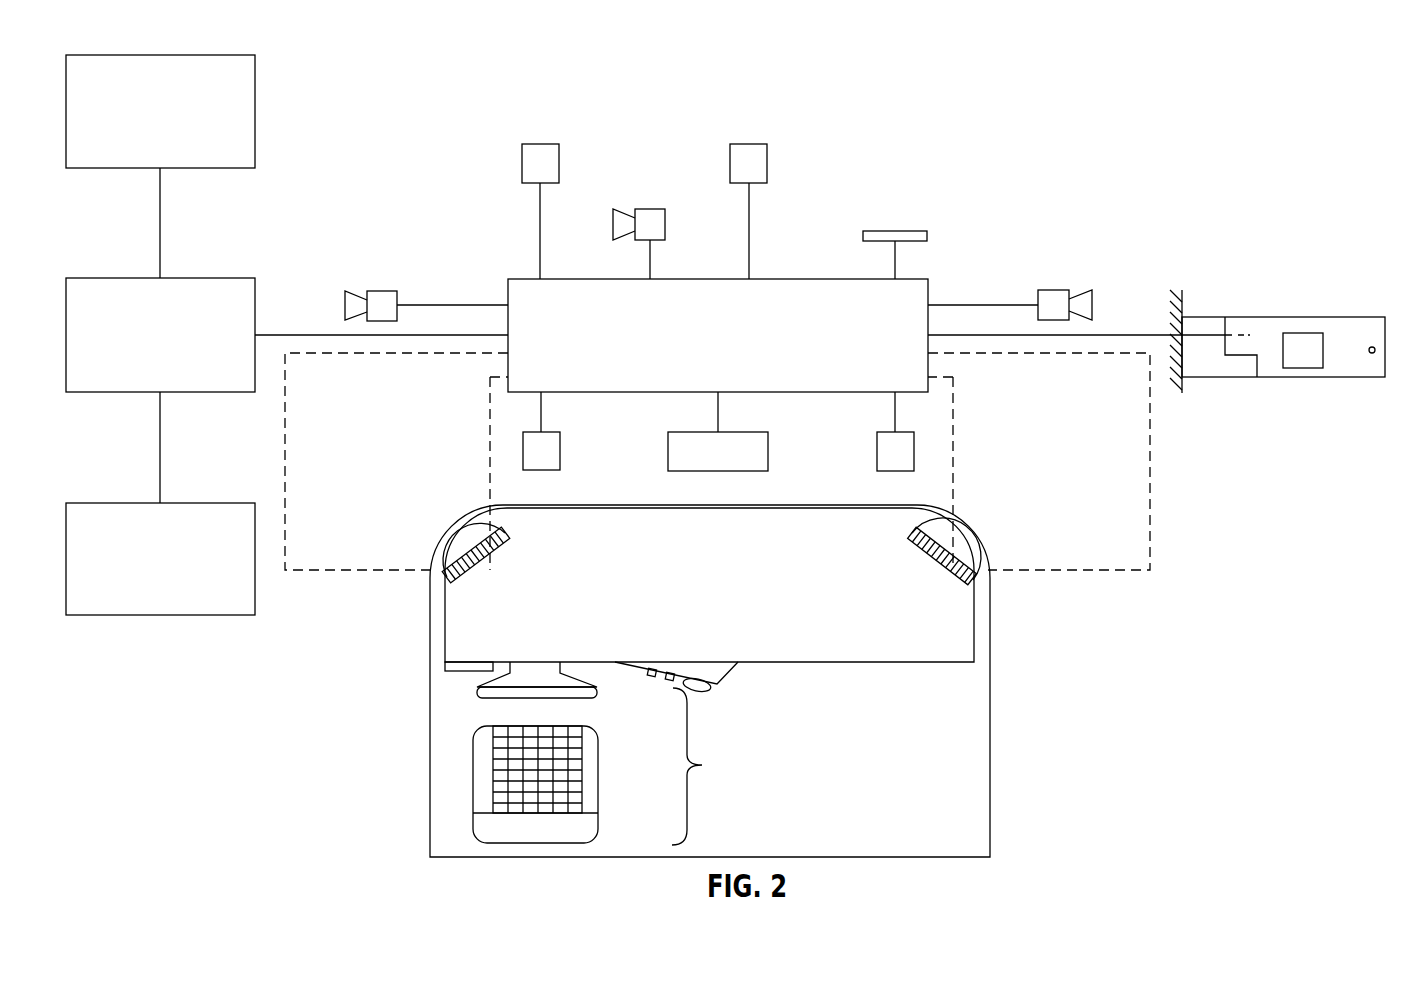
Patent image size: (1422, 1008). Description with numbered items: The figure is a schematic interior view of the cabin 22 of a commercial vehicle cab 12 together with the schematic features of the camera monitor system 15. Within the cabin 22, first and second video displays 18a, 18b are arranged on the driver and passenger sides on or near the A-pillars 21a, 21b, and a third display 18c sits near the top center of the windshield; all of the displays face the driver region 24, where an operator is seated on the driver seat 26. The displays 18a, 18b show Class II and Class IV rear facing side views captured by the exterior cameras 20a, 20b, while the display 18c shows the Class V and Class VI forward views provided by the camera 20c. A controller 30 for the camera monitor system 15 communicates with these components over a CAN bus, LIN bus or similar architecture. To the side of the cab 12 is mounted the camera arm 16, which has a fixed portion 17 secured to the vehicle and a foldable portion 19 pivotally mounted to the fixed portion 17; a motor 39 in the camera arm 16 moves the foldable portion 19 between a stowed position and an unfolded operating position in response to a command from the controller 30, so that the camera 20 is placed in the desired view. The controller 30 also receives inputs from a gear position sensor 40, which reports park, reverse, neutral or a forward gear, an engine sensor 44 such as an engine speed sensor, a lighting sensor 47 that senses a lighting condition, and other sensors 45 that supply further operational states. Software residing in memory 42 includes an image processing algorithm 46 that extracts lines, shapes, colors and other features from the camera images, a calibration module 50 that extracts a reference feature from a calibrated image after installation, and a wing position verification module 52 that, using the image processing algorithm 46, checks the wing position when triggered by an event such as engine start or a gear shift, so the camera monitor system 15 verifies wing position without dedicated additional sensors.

The vehicle cab 12 is at (1190, 298).
The camera monitor system 15 is at (976, 200).
The camera arm 16 is at (1276, 252).
The fixed portion 17 is at (1218, 370).
The first video display 18a is at (468, 544).
The second video display 18b is at (938, 540).
The third display 18c is at (892, 231).
The foldable portion 19 is at (1376, 378).
The camera 20 is at (1373, 346).
The exterior camera 20a is at (380, 291).
The exterior camera 20b is at (1057, 290).
The camera 20c is at (645, 209).
The A-pillar 21a is at (449, 556).
The A-pillar 21b is at (976, 546).
The cabin 22 is at (430, 718).
The driver region 24 is at (591, 753).
The driver seat 26 is at (592, 776).
The controller 30 is at (930, 282).
The motor 39 is at (1303, 333).
The gear position sensor 40 is at (541, 470).
The memory 42 is at (718, 471).
The engine sensor 44 is at (740, 144).
The other sensors 45 is at (895, 471).
The image processing algorithm 46 is at (116, 278).
The lighting sensor 47 is at (532, 144).
The calibration module 50 is at (116, 503).
The wing position verification module 52 is at (116, 55).